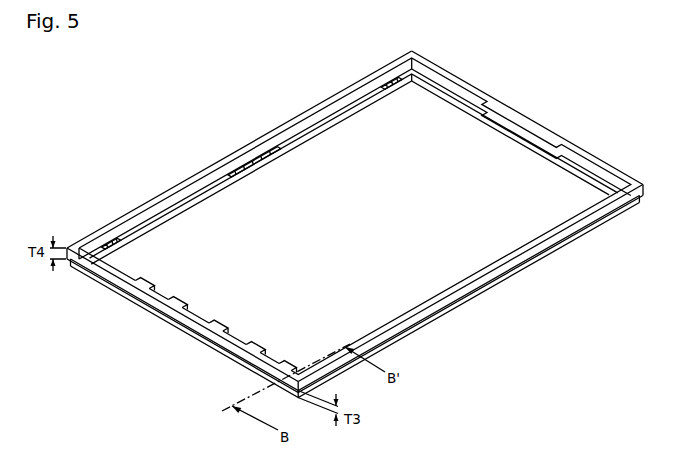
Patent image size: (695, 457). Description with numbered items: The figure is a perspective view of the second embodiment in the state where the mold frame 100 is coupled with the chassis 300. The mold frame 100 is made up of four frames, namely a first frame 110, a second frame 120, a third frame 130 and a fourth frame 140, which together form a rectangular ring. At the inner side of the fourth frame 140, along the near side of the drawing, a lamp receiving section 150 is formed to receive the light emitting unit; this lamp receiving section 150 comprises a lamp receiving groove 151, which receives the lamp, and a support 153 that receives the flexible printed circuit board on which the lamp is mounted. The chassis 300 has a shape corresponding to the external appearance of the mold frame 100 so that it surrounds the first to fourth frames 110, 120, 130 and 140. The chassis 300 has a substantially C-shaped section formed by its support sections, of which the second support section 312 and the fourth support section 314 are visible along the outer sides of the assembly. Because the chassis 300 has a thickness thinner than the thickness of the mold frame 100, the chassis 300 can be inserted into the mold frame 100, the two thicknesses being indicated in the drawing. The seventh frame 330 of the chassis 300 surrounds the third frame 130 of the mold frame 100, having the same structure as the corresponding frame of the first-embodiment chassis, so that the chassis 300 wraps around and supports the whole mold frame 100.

The mold frame 100 is at (597, 140).
The first frame 110 is at (293, 127).
The second frame 120 is at (457, 83).
The third frame 130 is at (525, 250).
The fourth frame 140 is at (276, 363).
The lamp receiving section 150 is at (227, 263).
The lamp receiving groove 151 is at (173, 300).
The support 153 is at (200, 316).
The chassis 300 is at (474, 311).
The second support section 312 is at (203, 345).
The fourth support section 314 is at (143, 298).
The seventh frame 330 is at (428, 310).